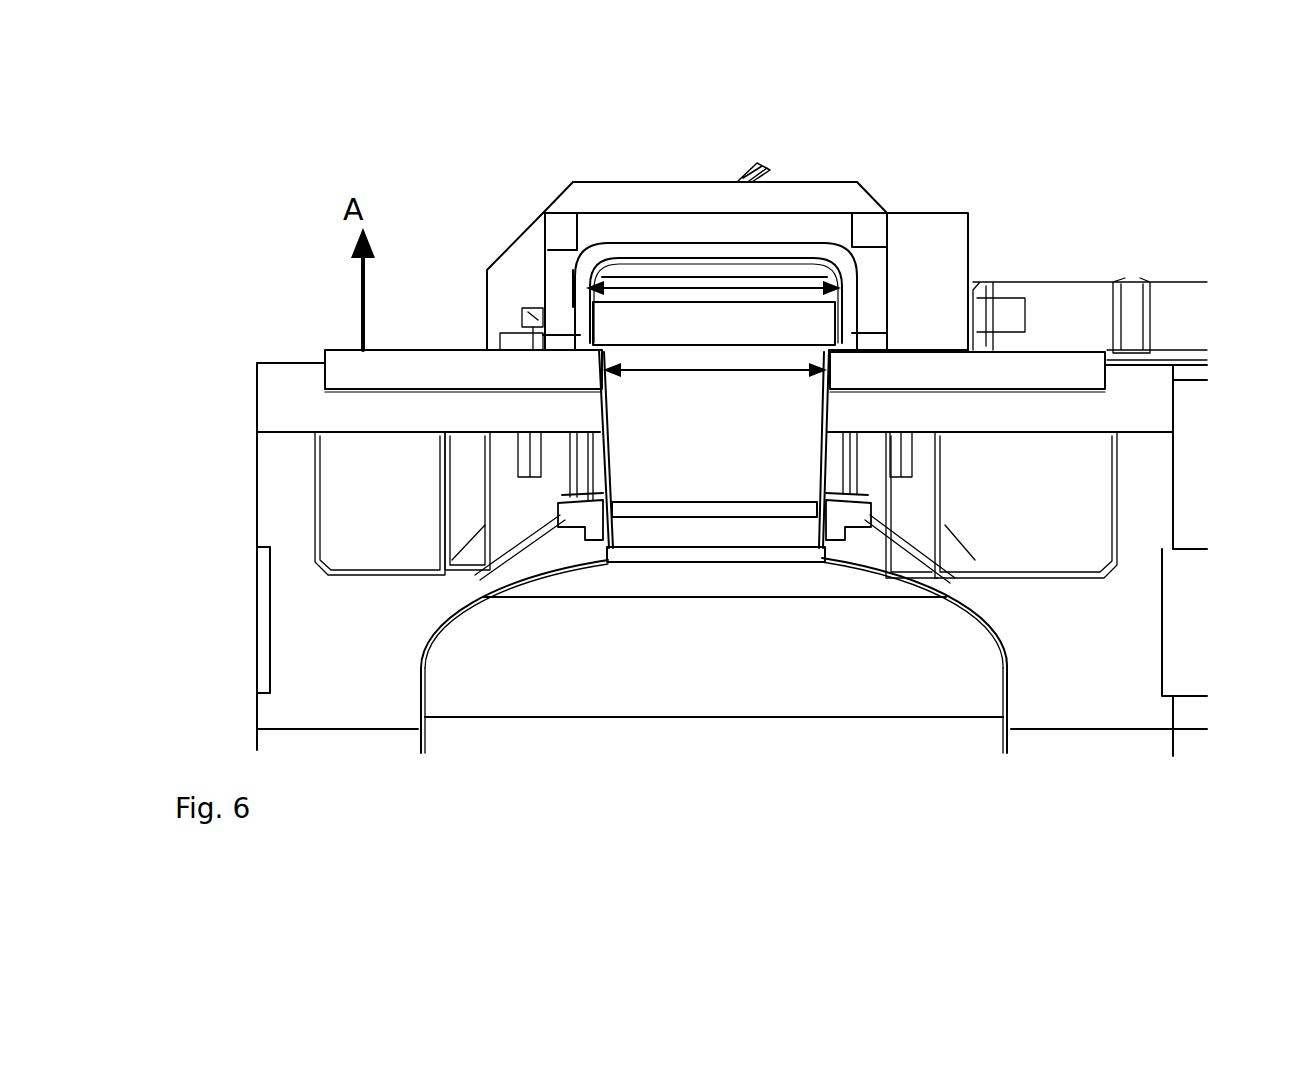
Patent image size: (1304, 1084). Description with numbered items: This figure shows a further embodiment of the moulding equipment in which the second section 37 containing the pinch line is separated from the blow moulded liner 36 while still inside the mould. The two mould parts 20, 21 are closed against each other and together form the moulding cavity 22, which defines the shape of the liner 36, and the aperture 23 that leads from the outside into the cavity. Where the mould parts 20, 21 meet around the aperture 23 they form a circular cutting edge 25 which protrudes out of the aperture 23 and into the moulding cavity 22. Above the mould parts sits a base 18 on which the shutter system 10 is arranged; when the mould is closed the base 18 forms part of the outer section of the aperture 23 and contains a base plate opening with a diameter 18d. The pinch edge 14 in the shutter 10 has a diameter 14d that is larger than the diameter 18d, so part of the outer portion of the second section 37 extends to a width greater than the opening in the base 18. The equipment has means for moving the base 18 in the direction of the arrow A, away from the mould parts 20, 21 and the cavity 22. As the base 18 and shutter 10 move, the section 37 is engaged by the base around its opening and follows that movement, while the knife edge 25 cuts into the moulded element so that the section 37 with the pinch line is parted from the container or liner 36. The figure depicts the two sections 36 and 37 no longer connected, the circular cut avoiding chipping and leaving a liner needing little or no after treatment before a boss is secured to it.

The shutter system 10 is at (812, 168).
The pinch edge 14 is at (650, 253).
The diameter of the pinch edge 14d is at (660, 290).
The base 18 is at (466, 368).
The diameter of the base plate opening 18d is at (715, 387).
The mould part 20 is at (337, 640).
The mould part 21 is at (1146, 530).
The moulding cavity 22 is at (1004, 660).
The aperture 23 is at (830, 405).
The circular cutting edge 25 is at (610, 562).
The blow moulded liner 36 is at (766, 624).
The second section 37 is at (708, 460).